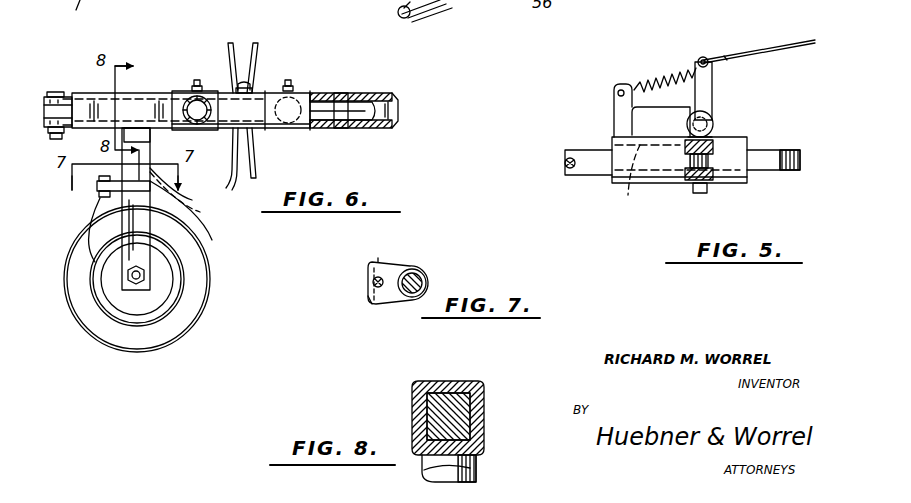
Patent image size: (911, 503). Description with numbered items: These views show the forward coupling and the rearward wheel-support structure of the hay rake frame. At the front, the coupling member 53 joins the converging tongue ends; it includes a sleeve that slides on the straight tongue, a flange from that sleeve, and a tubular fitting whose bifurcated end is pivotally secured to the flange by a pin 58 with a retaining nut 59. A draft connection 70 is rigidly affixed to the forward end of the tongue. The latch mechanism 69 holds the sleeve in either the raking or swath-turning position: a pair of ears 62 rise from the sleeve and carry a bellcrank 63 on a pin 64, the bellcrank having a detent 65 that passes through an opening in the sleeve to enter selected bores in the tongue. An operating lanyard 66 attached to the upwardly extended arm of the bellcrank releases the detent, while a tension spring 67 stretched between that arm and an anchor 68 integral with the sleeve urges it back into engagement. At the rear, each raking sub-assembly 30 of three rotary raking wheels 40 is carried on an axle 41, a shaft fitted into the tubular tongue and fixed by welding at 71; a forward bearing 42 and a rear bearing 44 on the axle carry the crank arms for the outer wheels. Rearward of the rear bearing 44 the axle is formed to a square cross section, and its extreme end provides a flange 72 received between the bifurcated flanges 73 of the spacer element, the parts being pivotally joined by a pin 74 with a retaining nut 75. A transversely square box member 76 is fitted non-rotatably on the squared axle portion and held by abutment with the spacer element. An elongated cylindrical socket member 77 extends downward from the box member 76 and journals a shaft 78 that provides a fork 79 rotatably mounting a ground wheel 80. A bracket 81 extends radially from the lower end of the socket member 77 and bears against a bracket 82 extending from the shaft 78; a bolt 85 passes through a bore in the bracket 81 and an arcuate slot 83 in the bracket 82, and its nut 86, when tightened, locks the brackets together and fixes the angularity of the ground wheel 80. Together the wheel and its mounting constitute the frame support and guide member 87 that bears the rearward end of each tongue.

In FIG. 6, the raking sub-assembly 30 is at (262, 50).
In FIG. 6, the rotary raking wheel 40 is at (256, 150).
In FIG. 6, the axle 41 is at (355, 114).
In FIG. 8, the axle 41 is at (460, 414).
In FIG. 6, the bearing 42 is at (300, 92).
In FIG. 6, the bearing 44 is at (242, 163).
In FIG. 5, the coupling member 53 is at (658, 186).
In FIG. 5, the pin 58 is at (714, 130).
In FIG. 5, the retaining nut 59 is at (712, 190).
In FIG. 5, the ears 62 is at (712, 116).
In FIG. 5, the bellcrank 63 is at (712, 88).
In FIG. 5, the pin 64 is at (698, 112).
In FIG. 5, the detent 65 is at (602, 180).
In FIG. 5, the operating lanyard 66 is at (775, 48).
In FIG. 5, the tension spring 67 is at (666, 76).
In FIG. 5, the anchor 68 is at (612, 108).
In FIG. 5, the latch mechanism 69 is at (705, 54).
In FIG. 5, the draft connection 70 is at (782, 152).
In FIG. 6, the welding 71 is at (345, 92).
In FIG. 6, the flange 72 is at (44, 105).
In FIG. 6, the bifurcated flanges 73 is at (54, 92).
In FIG. 6, the pin 74 is at (66, 96).
In FIG. 6, the retaining nut 75 is at (122, 136).
In FIG. 6, the box member 76 is at (140, 92).
In FIG. 8, the box member 76 is at (484, 384).
In FIG. 6, the socket member 77 is at (150, 168).
In FIG. 7, the socket member 77 is at (418, 272).
In FIG. 8, the socket member 77 is at (478, 470).
In FIG. 6, the shaft 78 is at (185, 196).
In FIG. 7, the shaft 78 is at (420, 282).
In FIG. 6, the fork 79 is at (140, 254).
In FIG. 6, the ground wheel 80 is at (194, 296).
In FIG. 6, the bracket 81 is at (150, 188).
In FIG. 7, the bracket 81 is at (392, 290).
In FIG. 6, the bracket 82 is at (118, 205).
In FIG. 7, the bracket 82 is at (370, 300).
In FIG. 7, the arcuate slot 83 is at (380, 268).
In FIG. 6, the bolt 85 is at (98, 184).
In FIG. 7, the bolt 85 is at (372, 282).
In FIG. 6, the nut 86 is at (100, 195).
In FIG. 6, the frame support and guide member 87 is at (178, 88).